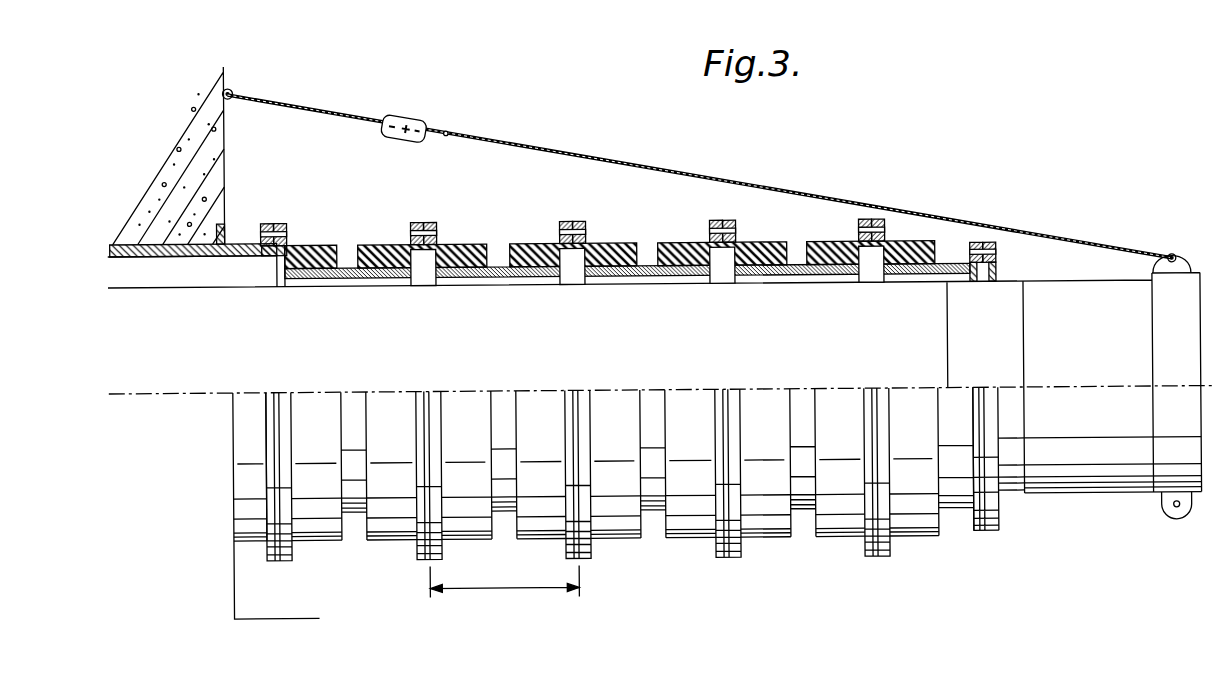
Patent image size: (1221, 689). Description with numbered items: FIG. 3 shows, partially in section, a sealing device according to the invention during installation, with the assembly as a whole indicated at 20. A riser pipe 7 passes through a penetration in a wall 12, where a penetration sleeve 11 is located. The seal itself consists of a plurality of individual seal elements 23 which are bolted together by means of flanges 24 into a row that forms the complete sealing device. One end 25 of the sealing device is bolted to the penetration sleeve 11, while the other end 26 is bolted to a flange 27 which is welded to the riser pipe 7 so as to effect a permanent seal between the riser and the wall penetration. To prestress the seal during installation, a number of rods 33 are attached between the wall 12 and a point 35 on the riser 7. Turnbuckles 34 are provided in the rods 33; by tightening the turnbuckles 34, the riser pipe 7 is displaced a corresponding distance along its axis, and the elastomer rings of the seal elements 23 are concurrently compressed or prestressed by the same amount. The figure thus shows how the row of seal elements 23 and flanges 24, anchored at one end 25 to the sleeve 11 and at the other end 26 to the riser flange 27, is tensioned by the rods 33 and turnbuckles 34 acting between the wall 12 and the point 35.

The riser pipe 7 is at (146, 308).
The penetration sleeve 11 is at (188, 257).
The wall 12 is at (200, 158).
The pipe support assembly 20 is at (830, 149).
The seal elements 23 is at (504, 580).
The flanges 24 is at (724, 562).
The end of the sealing device 25 is at (273, 228).
The other end of the sealing device 26 is at (984, 538).
The flange 27 is at (996, 270).
The rods 33 is at (568, 156).
The turnbuckles 34 is at (419, 122).
The point on the riser 35 is at (1180, 261).